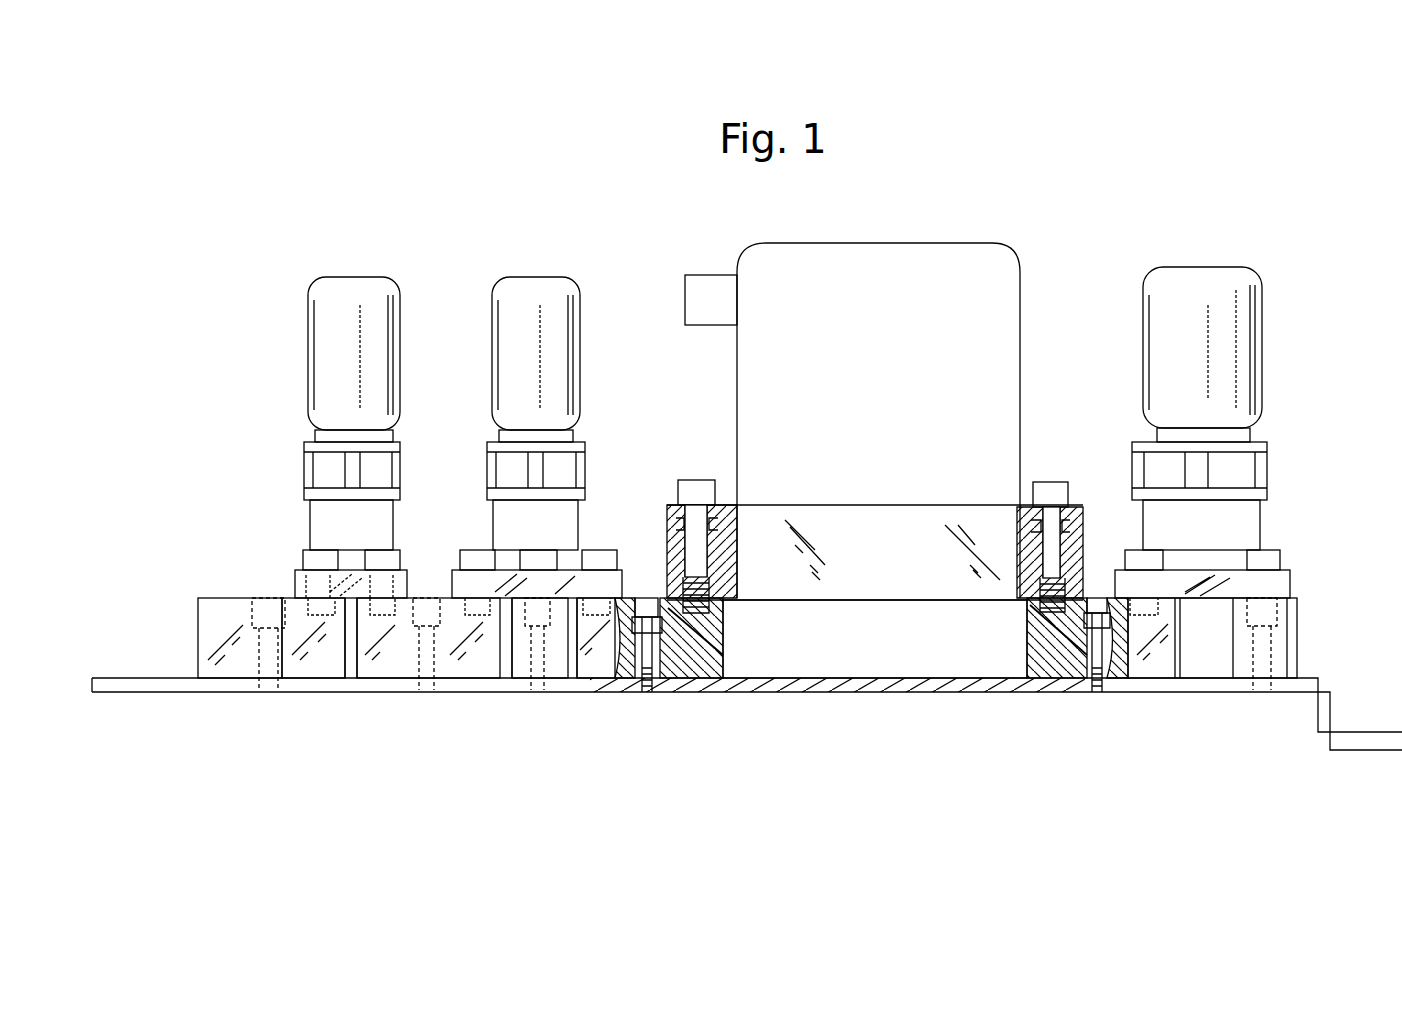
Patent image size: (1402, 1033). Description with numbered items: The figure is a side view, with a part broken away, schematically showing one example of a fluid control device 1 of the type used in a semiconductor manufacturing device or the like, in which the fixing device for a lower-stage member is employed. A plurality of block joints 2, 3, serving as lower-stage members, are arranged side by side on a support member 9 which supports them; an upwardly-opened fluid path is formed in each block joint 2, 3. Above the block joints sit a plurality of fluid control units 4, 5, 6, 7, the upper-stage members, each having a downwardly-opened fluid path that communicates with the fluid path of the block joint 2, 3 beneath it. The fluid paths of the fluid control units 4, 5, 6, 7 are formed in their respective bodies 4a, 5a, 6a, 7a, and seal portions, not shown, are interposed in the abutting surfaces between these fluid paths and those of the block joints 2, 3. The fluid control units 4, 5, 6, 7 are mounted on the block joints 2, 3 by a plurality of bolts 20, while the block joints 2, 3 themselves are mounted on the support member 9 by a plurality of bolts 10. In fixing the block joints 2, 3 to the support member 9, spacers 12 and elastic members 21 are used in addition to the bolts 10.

The fluid control device 1 is at (1067, 238).
The block joint 2 is at (305, 668).
The block joint 3 is at (556, 672).
The fluid control unit 4 is at (355, 277).
The body 4a is at (297, 585).
The fluid control unit 5 is at (518, 277).
The body 5a is at (517, 562).
The fluid control unit 6 is at (882, 243).
The body 6a is at (672, 505).
The fluid control unit 7 is at (1212, 265).
The body 7a is at (1210, 570).
The support member 9 is at (470, 684).
The bolt 10 is at (424, 598).
The spacer 12 is at (648, 665).
The bolt 20 is at (305, 552).
The elastic member 21 is at (613, 662).